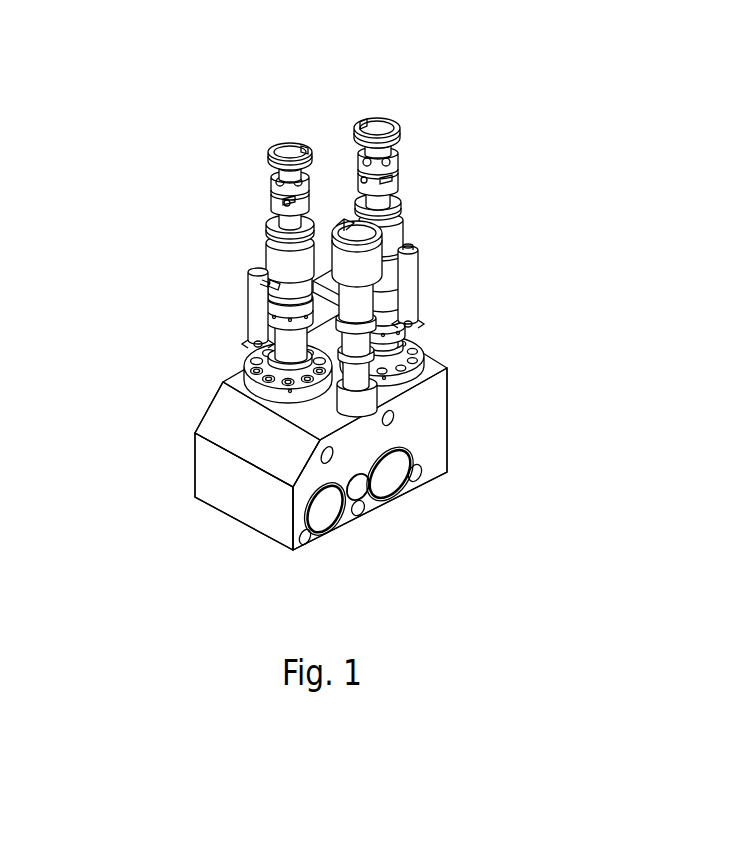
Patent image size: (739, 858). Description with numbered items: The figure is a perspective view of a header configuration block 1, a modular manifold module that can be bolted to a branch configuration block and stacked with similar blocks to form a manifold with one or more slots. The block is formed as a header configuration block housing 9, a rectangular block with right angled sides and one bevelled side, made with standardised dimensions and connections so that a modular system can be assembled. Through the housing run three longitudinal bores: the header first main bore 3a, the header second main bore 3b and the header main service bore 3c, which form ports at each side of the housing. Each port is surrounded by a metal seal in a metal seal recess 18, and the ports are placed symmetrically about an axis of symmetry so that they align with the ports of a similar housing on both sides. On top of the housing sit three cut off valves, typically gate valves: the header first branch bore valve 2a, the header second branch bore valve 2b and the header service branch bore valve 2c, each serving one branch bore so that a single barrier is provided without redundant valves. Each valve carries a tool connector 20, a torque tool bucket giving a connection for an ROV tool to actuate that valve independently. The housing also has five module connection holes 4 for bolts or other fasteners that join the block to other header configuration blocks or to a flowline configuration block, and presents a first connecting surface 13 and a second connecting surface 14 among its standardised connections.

The header configuration block 1 is at (225, 477).
The header first branch bore valve 2a is at (273, 197).
The header second branch bore valve 2b is at (392, 163).
The header service branch bore valve 2c is at (368, 307).
The header first main bore 3a is at (326, 512).
The header second main bore 3b is at (392, 478).
The header main service bore 3c is at (357, 479).
The module connection hole 4 is at (388, 414).
The header configuration block housing 9 is at (216, 457).
The first connecting surface 13 is at (432, 419).
The second connecting surface 14 is at (213, 395).
The metal seal in metal seal recess 18 is at (406, 452).
The tool connector 20 is at (285, 152).